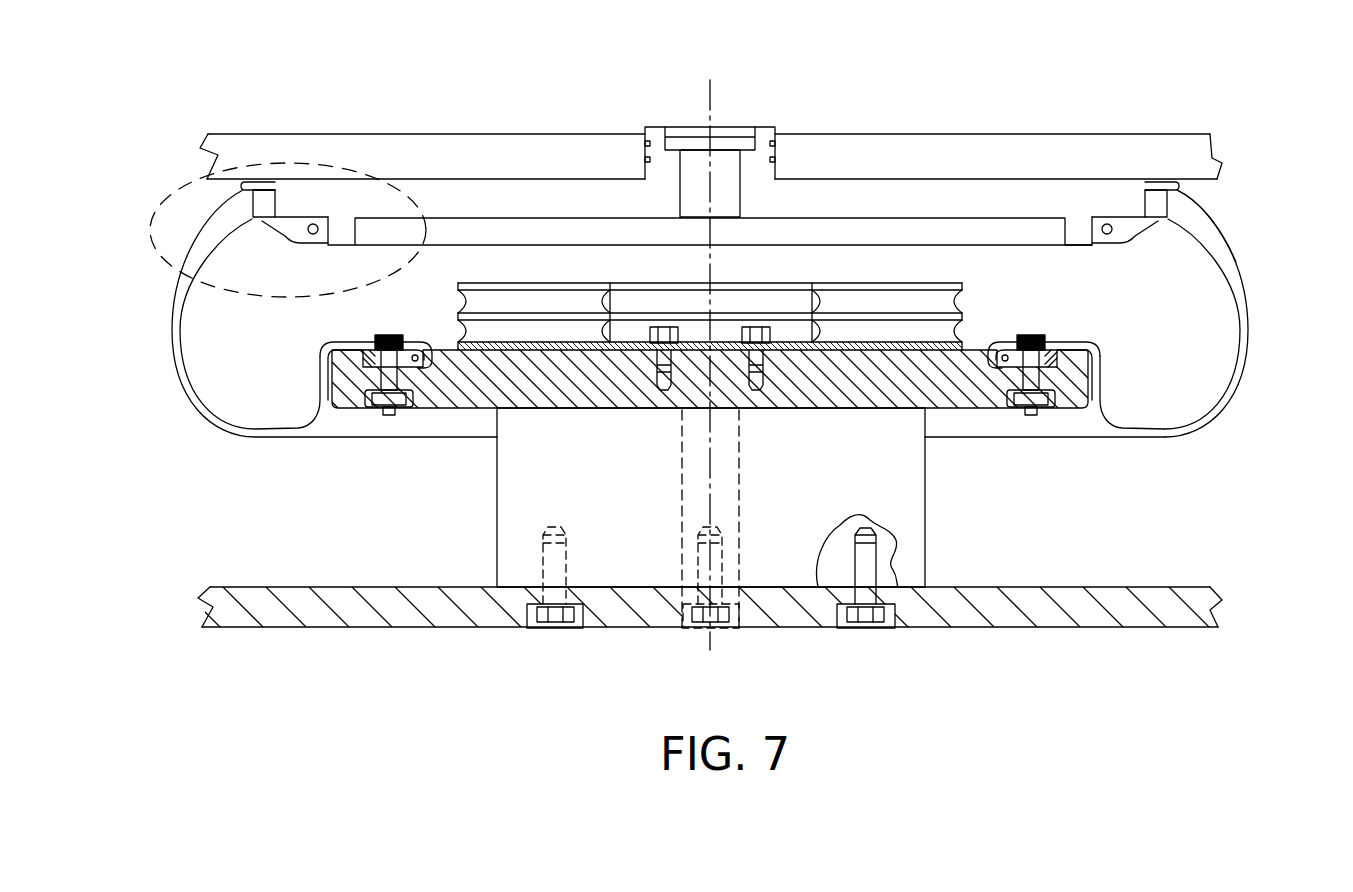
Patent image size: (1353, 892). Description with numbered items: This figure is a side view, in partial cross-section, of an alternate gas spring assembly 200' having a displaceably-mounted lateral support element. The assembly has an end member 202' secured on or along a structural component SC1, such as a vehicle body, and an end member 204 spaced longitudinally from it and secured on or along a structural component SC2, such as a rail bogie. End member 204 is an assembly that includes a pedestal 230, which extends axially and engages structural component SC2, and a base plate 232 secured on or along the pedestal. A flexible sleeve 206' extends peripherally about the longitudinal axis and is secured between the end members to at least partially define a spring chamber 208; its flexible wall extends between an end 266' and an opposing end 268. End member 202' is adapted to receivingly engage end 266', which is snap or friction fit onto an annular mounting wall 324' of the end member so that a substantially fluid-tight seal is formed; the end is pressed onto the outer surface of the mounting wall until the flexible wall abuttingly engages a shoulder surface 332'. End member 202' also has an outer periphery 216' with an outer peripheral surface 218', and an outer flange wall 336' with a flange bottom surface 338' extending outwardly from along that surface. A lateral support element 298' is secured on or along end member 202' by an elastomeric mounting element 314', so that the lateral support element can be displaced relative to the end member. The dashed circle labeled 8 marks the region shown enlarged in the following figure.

The gas spring assembly 200' is at (326, 350).
The end member 202' is at (820, 154).
The end member 204 is at (486, 518).
The flexible sleeve 206' is at (1092, 465).
The spring chamber 208 is at (1206, 318).
The outer periphery 216' is at (302, 153).
The outer peripheral surface 218' is at (279, 154).
The pedestal 230 is at (898, 515).
The base plate 232 is at (434, 420).
The end of flexible sleeve 266' is at (1106, 283).
The end of flexible wall 268 is at (336, 327).
The lateral support element 298' is at (1236, 205).
The elastomeric mounting element 314' is at (1200, 142).
The annular mounting wall 324' is at (710, 161).
The shoulder surface 332' is at (1138, 140).
The outer flange wall 336' is at (229, 131).
The flange bottom surface 338' is at (263, 128).
The detail reference to FIG. 8 is at (346, 167).
The structural component SC1 is at (1097, 152).
The structural component SC2 is at (1071, 608).